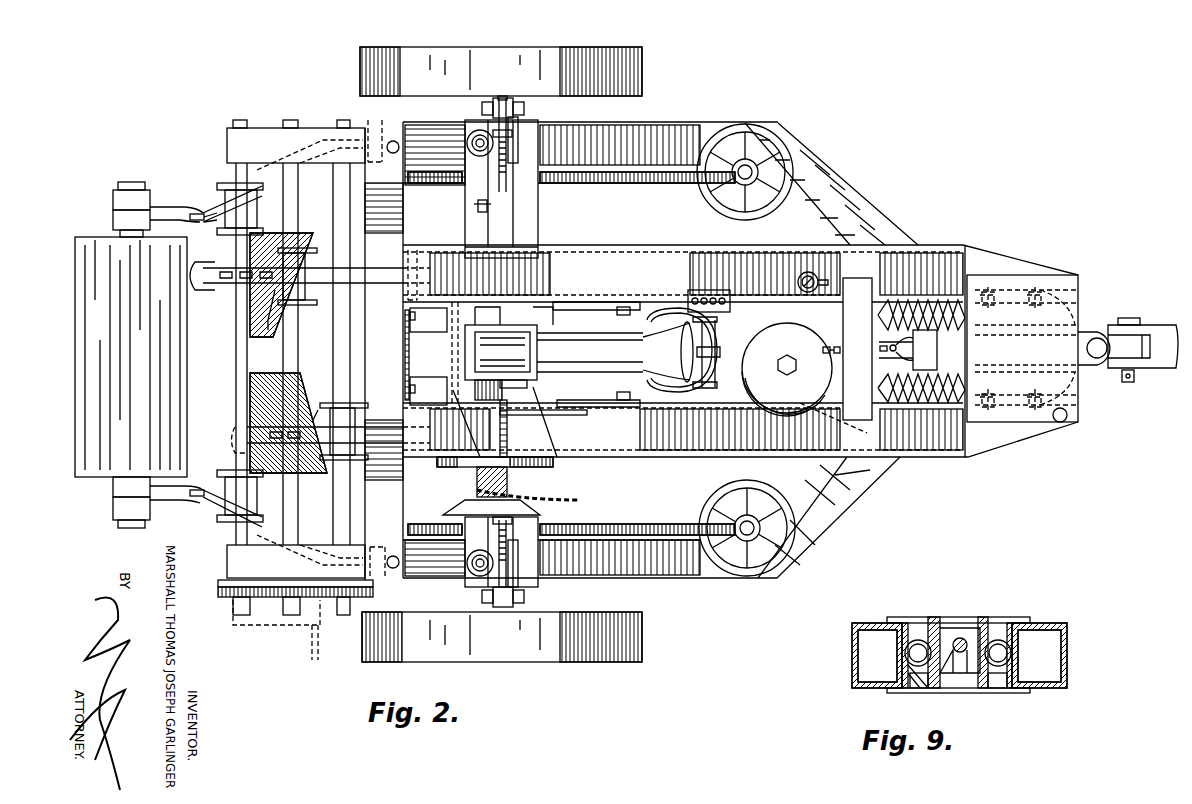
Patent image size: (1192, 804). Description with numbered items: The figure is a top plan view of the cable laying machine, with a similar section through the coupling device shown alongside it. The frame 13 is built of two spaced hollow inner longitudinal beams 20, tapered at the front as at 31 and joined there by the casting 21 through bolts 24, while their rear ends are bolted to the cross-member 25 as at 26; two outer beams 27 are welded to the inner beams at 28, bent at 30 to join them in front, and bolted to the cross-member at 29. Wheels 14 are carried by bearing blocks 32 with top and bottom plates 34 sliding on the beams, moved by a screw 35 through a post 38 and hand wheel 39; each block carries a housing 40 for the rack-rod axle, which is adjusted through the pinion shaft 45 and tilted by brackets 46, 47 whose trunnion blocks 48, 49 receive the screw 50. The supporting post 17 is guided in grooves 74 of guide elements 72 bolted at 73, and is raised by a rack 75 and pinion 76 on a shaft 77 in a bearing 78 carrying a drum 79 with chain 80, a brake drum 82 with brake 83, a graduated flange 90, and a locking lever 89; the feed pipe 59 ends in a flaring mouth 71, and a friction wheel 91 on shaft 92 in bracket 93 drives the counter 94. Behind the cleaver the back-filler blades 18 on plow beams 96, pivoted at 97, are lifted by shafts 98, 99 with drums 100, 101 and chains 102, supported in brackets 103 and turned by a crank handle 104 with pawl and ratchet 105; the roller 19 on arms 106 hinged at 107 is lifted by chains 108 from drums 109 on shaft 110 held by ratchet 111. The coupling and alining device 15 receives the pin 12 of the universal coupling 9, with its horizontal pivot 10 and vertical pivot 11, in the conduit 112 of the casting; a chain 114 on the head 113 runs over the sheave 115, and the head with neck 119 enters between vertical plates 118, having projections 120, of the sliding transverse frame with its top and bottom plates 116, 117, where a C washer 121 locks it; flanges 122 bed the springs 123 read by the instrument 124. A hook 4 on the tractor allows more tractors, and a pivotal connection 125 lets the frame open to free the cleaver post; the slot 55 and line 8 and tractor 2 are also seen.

In FIG. 2, the tractor drawbar 2 is at (1168, 370).
In FIG. 2, the hook 4 is at (500, 47).
In FIG. 2, the section line 8 is at (999, 226).
In FIG. 2, the universal coupling 9 is at (915, 210).
In FIG. 2, the horizontal pivot 10 is at (1142, 318).
In FIG. 2, the vertical pivot 11 is at (1098, 360).
In FIG. 2, the pin 12 is at (1092, 332).
In FIG. 2, the frame 13 is at (864, 180).
In FIG. 2, the wheels 14 is at (642, 70).
In FIG. 2, the coupling and alining device 15 is at (831, 313).
In FIG. 2, the supporting post 17 is at (524, 321).
In FIG. 2, the back-filler blades 18 is at (267, 373).
In FIG. 2, the roller 19 is at (95, 470).
In FIG. 2, the longitudinal beams 20 is at (772, 245).
In FIG. 9, the longitudinal beams 20 is at (872, 623).
In FIG. 2, the casting 21 is at (1065, 272).
In FIG. 2, the bolts 24 is at (1038, 292).
In FIG. 2, the cross-member 25 is at (398, 238).
In FIG. 2, the bolted connection 26 is at (445, 320).
In FIG. 2, the outer beams 27 is at (672, 123).
In FIG. 2, the welded joint 28 is at (863, 245).
In FIG. 2, the bolted connection 29 is at (396, 141).
In FIG. 2, the bent portion 30 is at (775, 123).
In FIG. 2, the tapered portion 31 is at (1025, 255).
In FIG. 2, the bearing blocks 32 is at (538, 224).
In FIG. 2, the top and bottom plates 34 is at (538, 240).
In FIG. 2, the screw 35 is at (632, 183).
In FIG. 2, the post 38 is at (745, 160).
In FIG. 2, the hand wheel 39 is at (700, 186).
In FIG. 2, the housing 40 is at (538, 208).
In FIG. 2, the pinion shaft 45 is at (476, 133).
In FIG. 2, the bracket 46 is at (518, 156).
In FIG. 2, the bracket 47 is at (485, 102).
In FIG. 2, the trunnion block 48 is at (507, 175).
In FIG. 2, the trunnion block 49 is at (503, 98).
In FIG. 2, the screw 50 is at (500, 188).
In FIG. 2, the slot 55 is at (440, 356).
In FIG. 2, the feed pipe 59 is at (622, 354).
In FIG. 2, the flaring mouth 71 is at (693, 388).
In FIG. 2, the guide element 72 is at (603, 408).
In FIG. 2, the bolted connection 73 is at (630, 305).
In FIG. 2, the guide grooves 74 is at (516, 316).
In FIG. 2, the rack 75 is at (527, 387).
In FIG. 2, the pinion 76 is at (495, 370).
In FIG. 2, the shaft 77 is at (497, 400).
In FIG. 2, the bearing 78 is at (507, 440).
In FIG. 2, the drum 79 is at (477, 478).
In FIG. 2, the chain 80 is at (580, 500).
In FIG. 2, the brake drum 82 is at (518, 467).
In FIG. 2, the brake mechanism 83 is at (555, 462).
In FIG. 2, the lever 89 is at (588, 418).
In FIG. 2, the outer flange 90 is at (470, 512).
In FIG. 2, the friction wheel 91 is at (722, 355).
In FIG. 2, the shaft 92 is at (716, 332).
In FIG. 2, the bracket 93 is at (650, 322).
In FIG. 2, the counter 94 is at (702, 290).
In FIG. 2, the plow beams 96 is at (325, 268).
In FIG. 2, the pivot 97 is at (440, 250).
In FIG. 2, the shaft 98 is at (283, 200).
In FIG. 2, the shaft 99 is at (333, 176).
In FIG. 2, the drum 100 is at (310, 305).
In FIG. 2, the drum 101 is at (335, 403).
In FIG. 2, the chains 102 is at (295, 356).
In FIG. 2, the brackets 103 is at (313, 130).
In FIG. 2, the crank handle 104 is at (285, 625).
In FIG. 2, the pawl and ratchet arrangement 105 is at (320, 597).
In FIG. 2, the arms 106 is at (177, 206).
In FIG. 2, the hinge 107 is at (375, 122).
In FIG. 2, the chains 108 is at (210, 222).
In FIG. 2, the drums 109 is at (228, 183).
In FIG. 2, the shaft 110 is at (236, 418).
In FIG. 2, the pawl and ratchet arrangement 111 is at (220, 592).
In FIG. 2, the conduit 112 is at (1080, 282).
In FIG. 2, the head 113 is at (890, 347).
In FIG. 2, the chain 114 is at (826, 347).
In FIG. 2, the sheave 115 is at (770, 372).
In FIG. 9, the top plate 116 is at (1025, 617).
In FIG. 9, the bottom plate 117 is at (1022, 693).
In FIG. 2, the vertical plates 118 is at (895, 366).
In FIG. 9, the vertical plates 118 is at (930, 623).
In FIG. 2, the neck portion 119 is at (937, 355).
In FIG. 9, the neck portion 119 is at (962, 638).
In FIG. 2, the inward projections 120 is at (937, 340).
In FIG. 2, the C washer 121 is at (905, 310).
In FIG. 9, the C washer 121 is at (952, 675).
In FIG. 9, the flanges 122 is at (918, 688).
In FIG. 2, the springs 123 is at (938, 300).
In FIG. 9, the springs 123 is at (1000, 640).
In FIG. 2, the instrument 124 is at (800, 278).
In FIG. 2, the pivotal connection 125 is at (1068, 418).